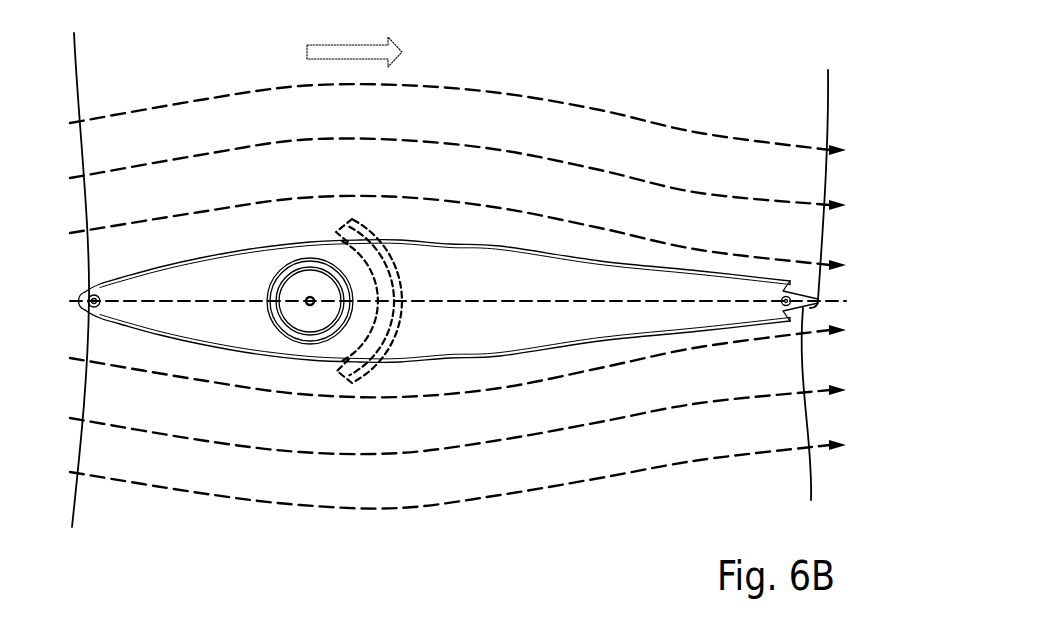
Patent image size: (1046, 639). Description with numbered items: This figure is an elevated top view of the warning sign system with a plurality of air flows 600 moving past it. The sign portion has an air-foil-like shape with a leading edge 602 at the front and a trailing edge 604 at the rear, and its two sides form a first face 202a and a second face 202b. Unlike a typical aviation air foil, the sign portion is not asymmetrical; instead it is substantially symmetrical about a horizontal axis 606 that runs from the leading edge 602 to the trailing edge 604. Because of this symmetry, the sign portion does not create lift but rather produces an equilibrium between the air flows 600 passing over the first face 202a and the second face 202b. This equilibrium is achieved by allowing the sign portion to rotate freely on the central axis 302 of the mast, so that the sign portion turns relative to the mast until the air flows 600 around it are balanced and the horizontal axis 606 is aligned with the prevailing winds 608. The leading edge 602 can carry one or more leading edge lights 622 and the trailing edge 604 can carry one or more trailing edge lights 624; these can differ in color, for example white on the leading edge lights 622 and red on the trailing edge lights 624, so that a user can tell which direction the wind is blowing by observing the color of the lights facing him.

The plurality of air flows 600 is at (505, 94).
The leading edge 602 is at (72, 527).
The trailing edge 604 is at (811, 500).
The horizontal axis 606 is at (427, 300).
The prevailing winds 608 is at (369, 46).
The one or more leading edge lights 622 is at (74, 33).
The one or more trailing edge lights 624 is at (828, 70).
The central axis 302 is at (310, 300).
The first face 202a is at (502, 352).
The second face 202b is at (572, 260).